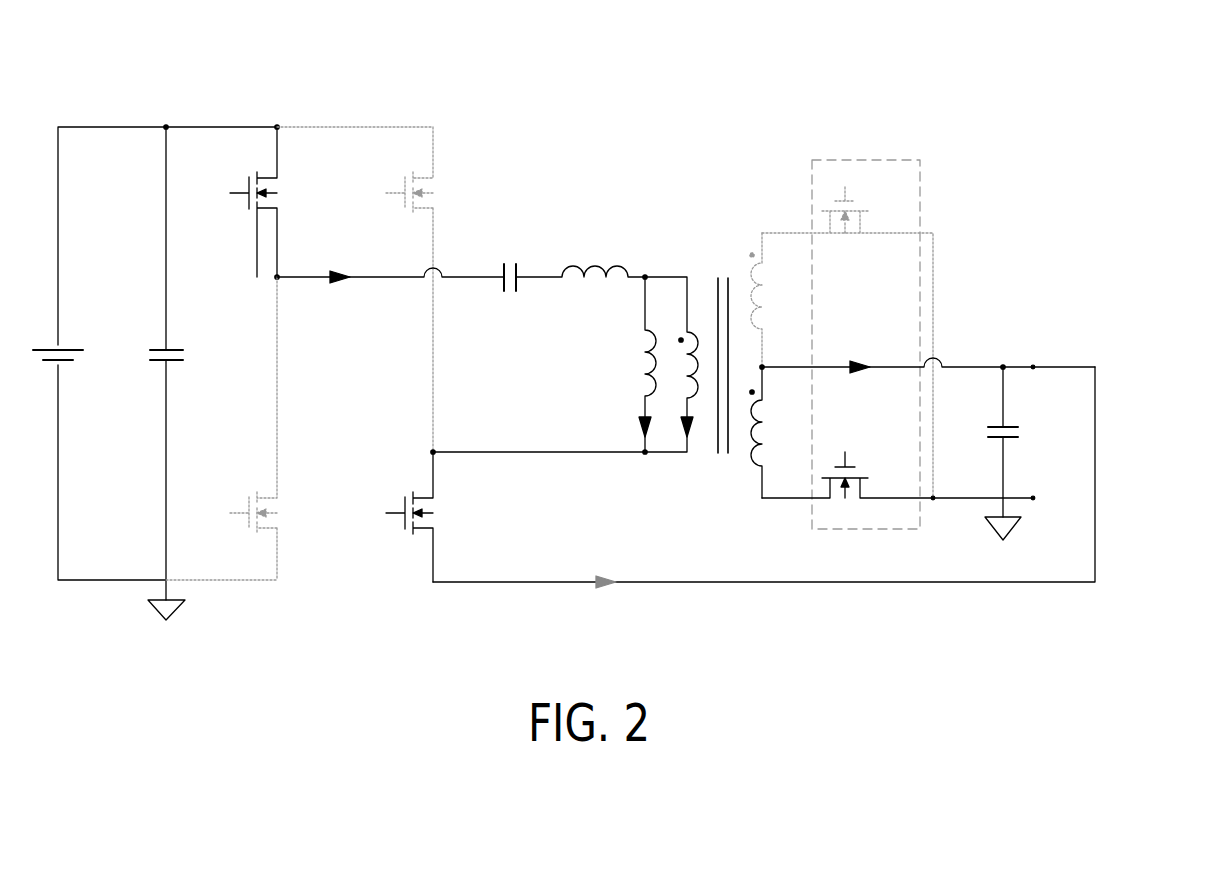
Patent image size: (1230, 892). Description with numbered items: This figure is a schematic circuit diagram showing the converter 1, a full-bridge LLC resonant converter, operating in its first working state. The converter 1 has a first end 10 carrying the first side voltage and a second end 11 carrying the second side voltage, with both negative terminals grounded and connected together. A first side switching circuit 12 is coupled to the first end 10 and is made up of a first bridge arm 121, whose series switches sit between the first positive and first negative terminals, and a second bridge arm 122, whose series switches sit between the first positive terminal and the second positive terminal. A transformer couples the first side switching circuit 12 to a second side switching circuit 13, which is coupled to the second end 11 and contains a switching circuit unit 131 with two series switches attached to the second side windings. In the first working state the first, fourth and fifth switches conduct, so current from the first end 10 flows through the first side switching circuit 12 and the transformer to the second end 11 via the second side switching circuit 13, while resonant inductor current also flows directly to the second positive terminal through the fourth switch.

The converter 1 is at (1187, 62).
The first end 10 is at (121, 106).
The second end 11 is at (1063, 340).
The first side switching circuit 12 is at (240, 46).
The first bridge arm 121 is at (263, 109).
The second bridge arm 122 is at (366, 109).
The second side switching circuit 13 is at (893, 133).
The switching circuit unit 131 is at (836, 160).